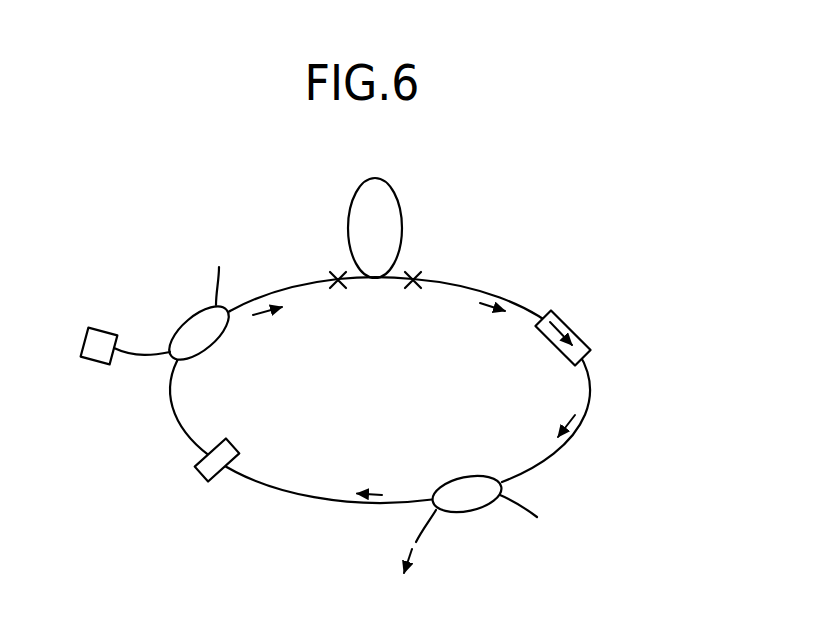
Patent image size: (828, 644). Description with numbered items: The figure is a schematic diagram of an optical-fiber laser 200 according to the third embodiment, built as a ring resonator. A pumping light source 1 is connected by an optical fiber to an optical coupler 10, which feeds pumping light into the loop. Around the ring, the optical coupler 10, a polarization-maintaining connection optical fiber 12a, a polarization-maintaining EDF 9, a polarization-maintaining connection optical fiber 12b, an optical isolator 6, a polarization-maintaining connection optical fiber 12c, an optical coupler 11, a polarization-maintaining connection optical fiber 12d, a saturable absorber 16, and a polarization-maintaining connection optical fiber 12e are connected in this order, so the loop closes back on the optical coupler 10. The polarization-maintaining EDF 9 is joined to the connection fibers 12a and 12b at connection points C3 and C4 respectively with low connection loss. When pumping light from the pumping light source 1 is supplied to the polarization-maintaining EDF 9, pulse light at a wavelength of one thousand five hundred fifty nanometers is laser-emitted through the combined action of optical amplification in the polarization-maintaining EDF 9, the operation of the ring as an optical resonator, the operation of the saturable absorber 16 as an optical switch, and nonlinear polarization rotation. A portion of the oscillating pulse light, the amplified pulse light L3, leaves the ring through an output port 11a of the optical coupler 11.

The pumping light source 1 is at (103, 328).
The optical isolator 6 is at (573, 332).
The polarization-maintaining EDF 9 is at (400, 205).
The optical coupler 10 is at (188, 315).
The optical coupler 11 is at (470, 513).
The output port 11a is at (420, 532).
The polarization-maintaining connection optical fiber 12a is at (272, 293).
The polarization-maintaining connection optical fiber 12b is at (513, 302).
The polarization-maintaining connection optical fiber 12c is at (591, 395).
The polarization-maintaining connection optical fiber 12d is at (312, 502).
The polarization-maintaining connection optical fiber 12e is at (178, 422).
The saturable absorber 16 is at (202, 482).
The optical-fiber laser 200 is at (599, 213).
The connection point C3 is at (334, 262).
The connection point C4 is at (419, 260).
The amplified pulse light L3 is at (411, 560).